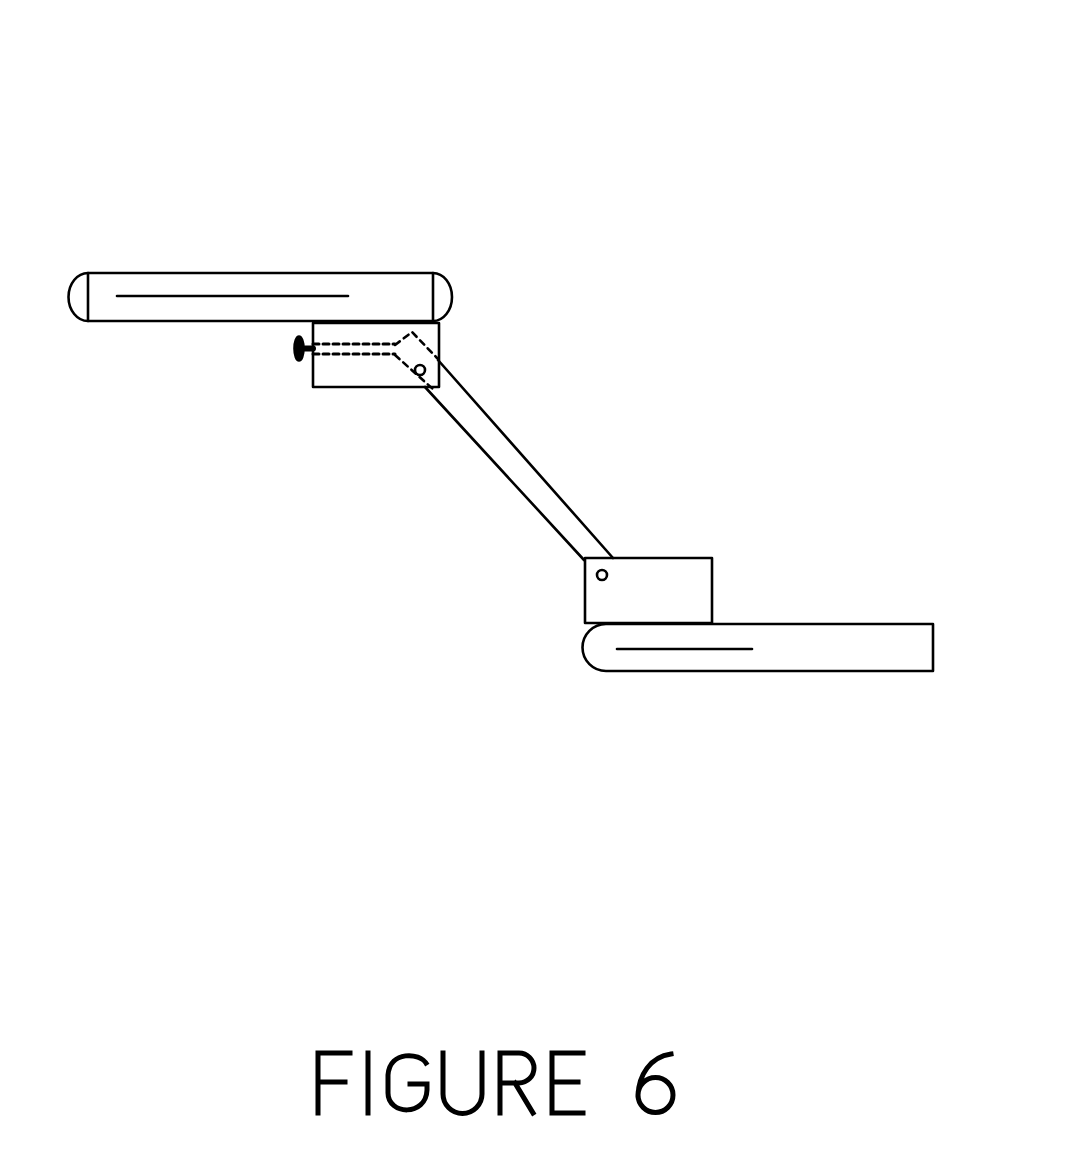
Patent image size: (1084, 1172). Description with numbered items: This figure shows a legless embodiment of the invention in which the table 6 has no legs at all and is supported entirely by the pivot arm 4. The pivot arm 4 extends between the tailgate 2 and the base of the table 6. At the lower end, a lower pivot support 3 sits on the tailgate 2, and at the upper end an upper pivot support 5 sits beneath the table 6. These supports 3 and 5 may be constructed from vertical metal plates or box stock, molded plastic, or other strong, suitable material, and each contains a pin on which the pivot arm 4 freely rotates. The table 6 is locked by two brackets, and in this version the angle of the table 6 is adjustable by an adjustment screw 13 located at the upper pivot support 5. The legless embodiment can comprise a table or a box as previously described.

The tailgate 2 is at (780, 674).
The lower pivot support 3 is at (670, 547).
The pivot arm 4 is at (505, 503).
The upper pivot support 5 is at (358, 405).
The table 6 is at (263, 263).
The adjustment screw 13 is at (280, 367).